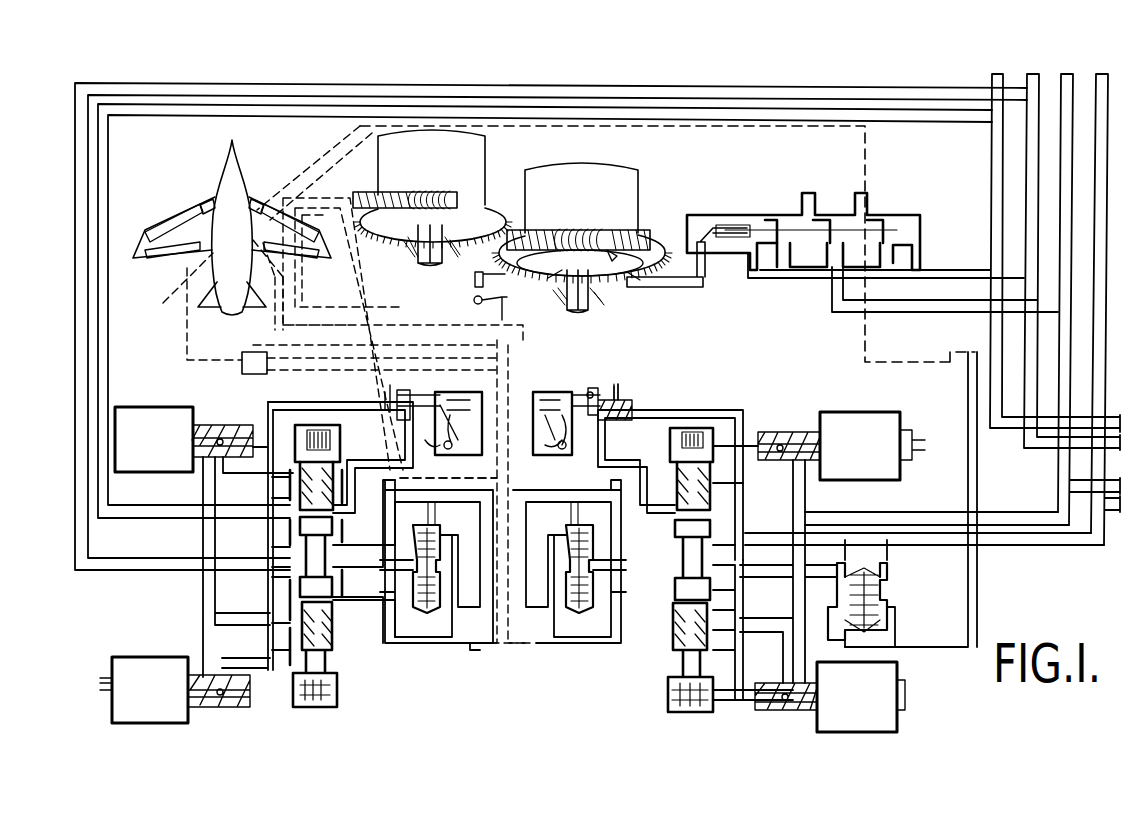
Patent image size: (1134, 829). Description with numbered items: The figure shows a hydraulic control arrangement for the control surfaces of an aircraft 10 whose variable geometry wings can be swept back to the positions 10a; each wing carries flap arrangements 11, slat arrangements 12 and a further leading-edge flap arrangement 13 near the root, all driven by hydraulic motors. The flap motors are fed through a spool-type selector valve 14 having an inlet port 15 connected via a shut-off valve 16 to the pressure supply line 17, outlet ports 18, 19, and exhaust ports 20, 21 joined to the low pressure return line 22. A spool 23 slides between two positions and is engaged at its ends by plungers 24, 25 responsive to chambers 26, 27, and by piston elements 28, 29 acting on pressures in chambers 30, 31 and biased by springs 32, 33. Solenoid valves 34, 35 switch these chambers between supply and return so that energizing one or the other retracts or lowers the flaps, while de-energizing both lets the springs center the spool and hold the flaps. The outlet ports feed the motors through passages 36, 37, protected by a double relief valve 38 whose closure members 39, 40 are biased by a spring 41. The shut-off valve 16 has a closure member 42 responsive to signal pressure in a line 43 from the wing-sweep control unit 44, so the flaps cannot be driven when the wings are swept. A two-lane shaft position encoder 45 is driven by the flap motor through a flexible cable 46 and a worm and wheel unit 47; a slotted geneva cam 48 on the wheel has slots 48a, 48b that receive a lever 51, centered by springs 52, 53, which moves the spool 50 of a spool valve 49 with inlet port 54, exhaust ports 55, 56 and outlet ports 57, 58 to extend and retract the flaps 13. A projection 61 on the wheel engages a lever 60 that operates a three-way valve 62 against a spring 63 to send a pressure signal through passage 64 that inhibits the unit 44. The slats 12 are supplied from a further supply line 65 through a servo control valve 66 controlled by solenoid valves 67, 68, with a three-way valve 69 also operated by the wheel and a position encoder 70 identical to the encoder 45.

The aircraft 10 is at (238, 162).
The swept-back wing positions 10a is at (209, 300).
The flap arrangements 11 is at (153, 255).
The slat arrangements 12 is at (160, 225).
The further flap arrangement 13 is at (205, 200).
The spool-type selector valve 14 is at (665, 713).
The inlet port 15 is at (710, 570).
The shut-off valve 16 is at (885, 624).
The pressure supply line 17 is at (1070, 543).
The outlet port 18 is at (672, 535).
The outlet port 19 is at (672, 600).
The exhaust port 20 is at (730, 508).
The exhaust port 21 is at (708, 612).
The low pressure return line 22 is at (998, 518).
The spool 23 is at (683, 552).
The plunger 24 is at (673, 630).
The plunger 25 is at (675, 488).
The chamber 26 is at (673, 655).
The chamber 27 is at (710, 490).
The piston element 28 is at (683, 670).
The piston element 29 is at (680, 480).
The chamber 30 is at (705, 712).
The chamber 31 is at (672, 448).
The spring 32 is at (668, 695).
The spring 33 is at (690, 432).
The solenoid valve 34 is at (850, 425).
The solenoid valve 35 is at (890, 720).
The passage 36 is at (505, 478).
The passage 37 is at (538, 648).
The double relief valve 38 is at (596, 580).
The closure member 39 is at (585, 535).
The closure member 40 is at (590, 605).
The spring 41 is at (600, 545).
The closure member 42 is at (872, 577).
The signal pressure line 43 is at (980, 573).
The wing-sweep control unit 44 is at (255, 374).
The two-lane shaft position encoder 45 is at (615, 178).
The flexible cable 46 is at (543, 235).
The worm and wheel unit 47 is at (613, 230).
The slotted geneva cam 48 is at (598, 300).
The slot 48a is at (553, 302).
The slot 48b is at (628, 280).
The spool valve 49 is at (905, 212).
The spool 50 is at (822, 225).
The lever 51 is at (697, 283).
The spring 52 is at (672, 290).
The spring 53 is at (693, 245).
The inlet port 54 is at (835, 275).
The exhaust port 55 is at (780, 270).
The exhaust port 56 is at (890, 263).
The outlet port 57 is at (866, 203).
The outlet port 58 is at (806, 203).
The lever 60 is at (555, 280).
The projection 61 is at (635, 245).
The three-way valve 62 is at (575, 400).
The spring 63 is at (548, 445).
The passage 64 is at (620, 392).
The further supply line 65 is at (908, 100).
The spool-type servo control valve 66 is at (340, 700).
The solenoid valve 67 is at (150, 430).
The solenoid valve 68 is at (153, 675).
The three-way valve 69 is at (465, 400).
The two-lane position encoder 70 is at (478, 168).